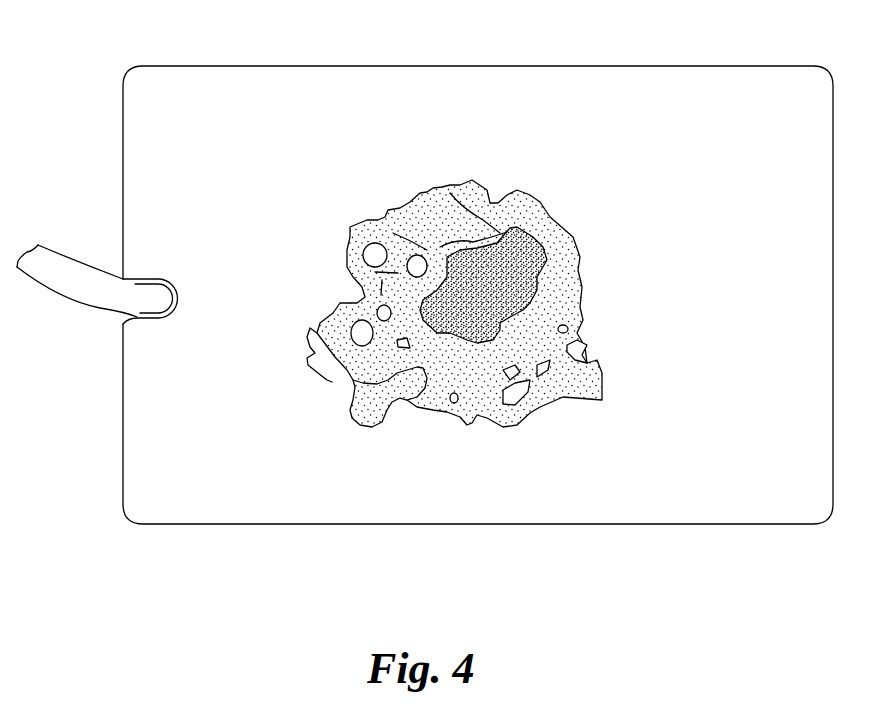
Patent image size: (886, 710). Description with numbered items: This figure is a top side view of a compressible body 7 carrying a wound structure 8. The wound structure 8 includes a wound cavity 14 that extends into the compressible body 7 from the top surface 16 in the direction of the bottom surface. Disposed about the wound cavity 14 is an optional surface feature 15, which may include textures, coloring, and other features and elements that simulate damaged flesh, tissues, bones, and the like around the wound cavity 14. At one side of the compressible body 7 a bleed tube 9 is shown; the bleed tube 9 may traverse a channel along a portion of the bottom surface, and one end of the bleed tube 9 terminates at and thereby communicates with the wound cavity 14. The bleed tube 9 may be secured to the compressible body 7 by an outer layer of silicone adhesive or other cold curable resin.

The compressible body 7 is at (444, 295).
The wound structure 8 is at (430, 301).
The bleed tube 9 is at (87, 290).
The wound cavity 14 is at (478, 278).
The surface feature 15 is at (370, 358).
The top surface 16 is at (145, 137).